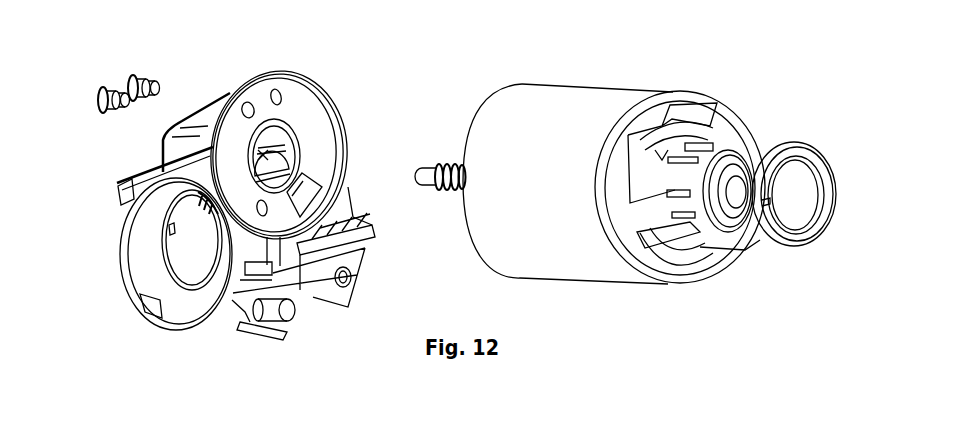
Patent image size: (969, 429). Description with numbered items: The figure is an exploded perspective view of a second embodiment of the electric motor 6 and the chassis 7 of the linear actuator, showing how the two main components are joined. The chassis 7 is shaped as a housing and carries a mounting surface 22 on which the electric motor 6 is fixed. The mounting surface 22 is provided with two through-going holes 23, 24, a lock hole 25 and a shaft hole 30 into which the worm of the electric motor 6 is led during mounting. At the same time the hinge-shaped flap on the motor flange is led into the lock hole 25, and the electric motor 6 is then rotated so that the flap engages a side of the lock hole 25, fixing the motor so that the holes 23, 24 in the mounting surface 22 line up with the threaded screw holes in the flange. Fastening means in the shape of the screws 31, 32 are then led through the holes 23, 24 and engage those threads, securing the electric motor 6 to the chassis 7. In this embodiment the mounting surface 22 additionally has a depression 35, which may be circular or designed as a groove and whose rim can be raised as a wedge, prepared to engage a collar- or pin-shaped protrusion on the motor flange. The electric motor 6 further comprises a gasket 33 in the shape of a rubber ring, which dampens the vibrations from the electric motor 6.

The electric motor 6 is at (592, 71).
The chassis 7 is at (307, 63).
The mounting surface 22 is at (308, 108).
The through-going hole 23 is at (274, 90).
The through-going hole 24 is at (246, 104).
The lock hole 25 is at (309, 192).
The shaft hole 30 is at (260, 163).
The screw 31 is at (130, 73).
The screw 32 is at (100, 95).
The gasket 33 is at (800, 163).
The depression 35 is at (258, 212).